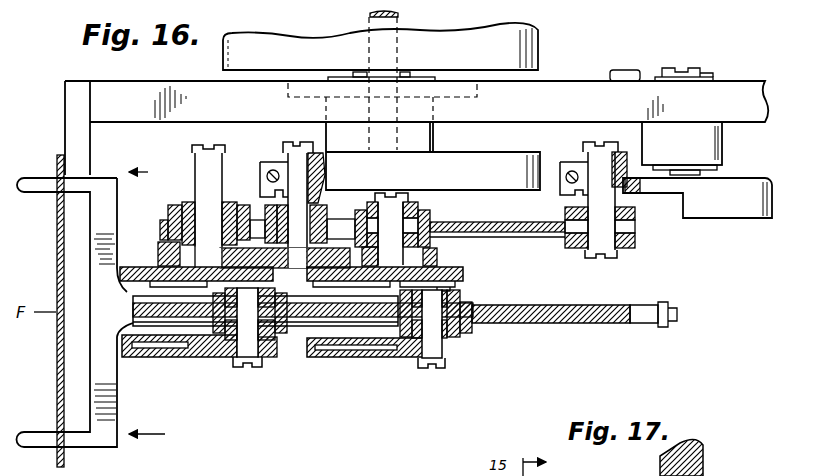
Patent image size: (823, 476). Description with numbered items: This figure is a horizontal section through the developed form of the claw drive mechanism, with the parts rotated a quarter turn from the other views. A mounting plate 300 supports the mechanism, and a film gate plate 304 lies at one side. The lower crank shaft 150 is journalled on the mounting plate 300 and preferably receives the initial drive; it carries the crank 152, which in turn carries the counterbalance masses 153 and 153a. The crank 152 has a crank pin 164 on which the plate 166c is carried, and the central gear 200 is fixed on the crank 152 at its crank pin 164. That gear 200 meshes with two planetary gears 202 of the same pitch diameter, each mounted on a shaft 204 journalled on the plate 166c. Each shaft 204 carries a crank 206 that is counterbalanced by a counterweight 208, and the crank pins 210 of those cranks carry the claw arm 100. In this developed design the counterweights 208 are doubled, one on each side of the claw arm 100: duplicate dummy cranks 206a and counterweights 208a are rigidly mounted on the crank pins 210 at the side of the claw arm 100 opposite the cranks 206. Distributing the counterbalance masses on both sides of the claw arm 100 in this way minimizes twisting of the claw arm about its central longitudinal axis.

The mounting plate 300 is at (574, 113).
The film gate plate 304 is at (66, 103).
The crank shaft 150 is at (400, 16).
The crank 152 is at (358, 184).
The counterbalance mass 153a is at (500, 184).
The counterbalance mass 153 is at (738, 222).
The crank pin 164 is at (293, 163).
The shaft 204 is at (200, 197).
The gear 200 is at (260, 222).
The plate 166c is at (520, 238).
The planetary gear 202 is at (162, 256).
The crank 206 is at (312, 284).
The counterweight 208 is at (137, 294).
The dummy counterweight 208a is at (170, 356).
The dummy crank 206a is at (224, 358).
The claw arm 100 is at (193, 326).
The crank pin 210 is at (276, 343).